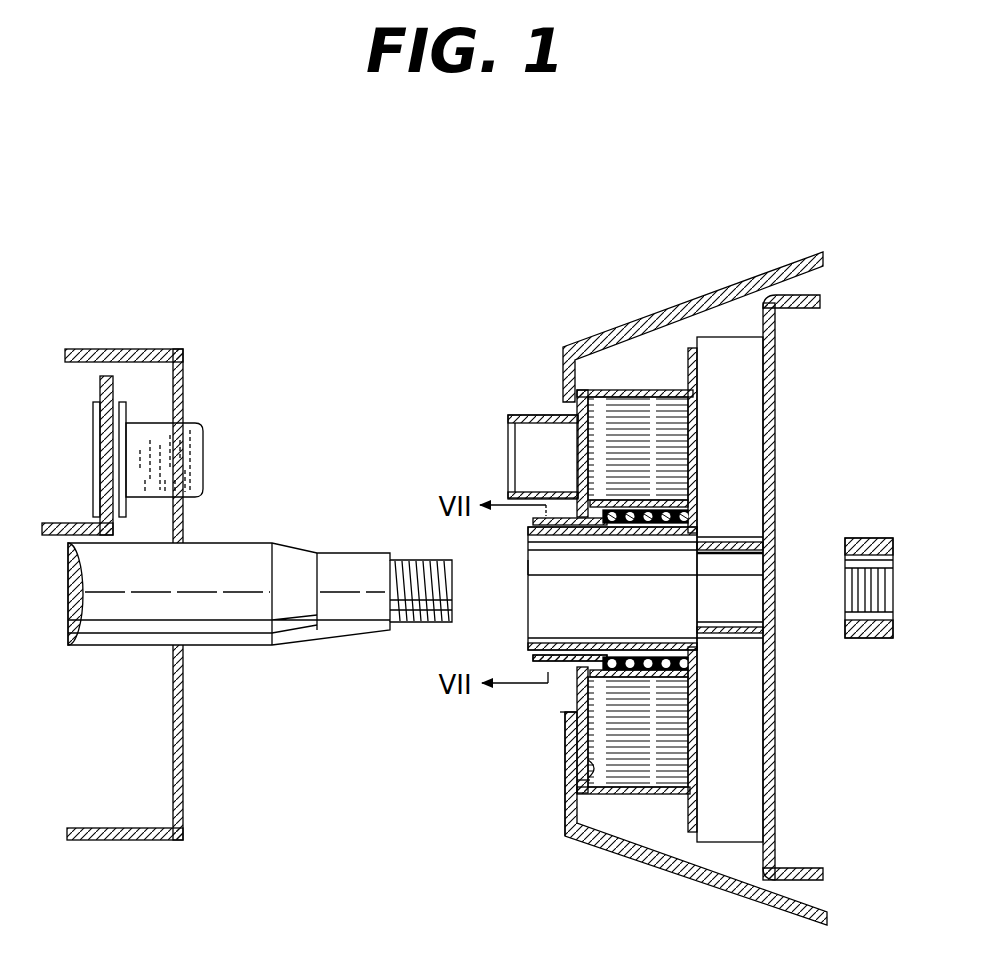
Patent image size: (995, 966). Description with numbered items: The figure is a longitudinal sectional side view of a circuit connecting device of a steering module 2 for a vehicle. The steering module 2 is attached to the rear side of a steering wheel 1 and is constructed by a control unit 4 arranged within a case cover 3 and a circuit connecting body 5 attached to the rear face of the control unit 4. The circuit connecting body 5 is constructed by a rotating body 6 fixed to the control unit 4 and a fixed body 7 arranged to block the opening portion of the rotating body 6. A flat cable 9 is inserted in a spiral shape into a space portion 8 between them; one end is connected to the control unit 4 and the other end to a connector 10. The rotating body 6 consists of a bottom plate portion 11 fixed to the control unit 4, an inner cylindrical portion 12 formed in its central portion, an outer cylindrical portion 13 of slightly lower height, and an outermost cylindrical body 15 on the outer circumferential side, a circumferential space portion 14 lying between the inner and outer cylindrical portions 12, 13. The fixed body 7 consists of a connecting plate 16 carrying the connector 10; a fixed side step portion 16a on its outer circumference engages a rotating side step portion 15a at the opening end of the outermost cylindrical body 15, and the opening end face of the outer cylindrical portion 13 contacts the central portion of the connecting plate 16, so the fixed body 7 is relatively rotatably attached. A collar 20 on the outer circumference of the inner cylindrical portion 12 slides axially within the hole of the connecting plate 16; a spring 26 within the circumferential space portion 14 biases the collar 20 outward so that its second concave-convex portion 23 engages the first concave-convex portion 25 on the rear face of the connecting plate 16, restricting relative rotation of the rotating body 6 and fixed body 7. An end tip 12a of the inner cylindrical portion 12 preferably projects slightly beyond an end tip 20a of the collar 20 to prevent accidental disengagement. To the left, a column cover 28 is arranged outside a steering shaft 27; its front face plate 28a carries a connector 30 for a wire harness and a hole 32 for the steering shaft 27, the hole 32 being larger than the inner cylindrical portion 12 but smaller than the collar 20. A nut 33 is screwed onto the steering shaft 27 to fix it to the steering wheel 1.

The steering wheel 1 is at (778, 832).
The steering module 2 is at (515, 330).
The case cover 3 is at (798, 258).
The control unit 4 is at (735, 350).
The circuit connecting body 5 is at (628, 248).
The rotating body 6 is at (622, 390).
The fixed body 7 is at (560, 400).
The space portion 8 is at (690, 810).
The flat cable 9 is at (660, 732).
The connector 10 is at (515, 440).
The bottom plate portion 11 is at (690, 348).
The inner cylindrical portion 12 is at (655, 527).
The end tip 12a is at (530, 570).
The outer cylindrical portion 13 is at (636, 500).
The circumferential space portion 14 is at (625, 527).
The outermost cylindrical body 15 is at (668, 795).
The rotating side step portion 15a is at (585, 790).
The connecting plate 16 is at (565, 722).
The fixed side step portion 16a is at (598, 768).
The collar 20 is at (560, 530).
The end tip 20a is at (535, 521).
The second concave-convex portion 23 is at (548, 660).
The first concave-convex portion 25 is at (548, 660).
The spring 26 is at (690, 515).
The steering shaft 27 is at (358, 628).
The column cover 28 is at (160, 349).
The front face plate 28a is at (185, 790).
The connector for a wire harness 30 is at (203, 450).
The hole 32 is at (183, 415).
The nut 33 is at (847, 636).